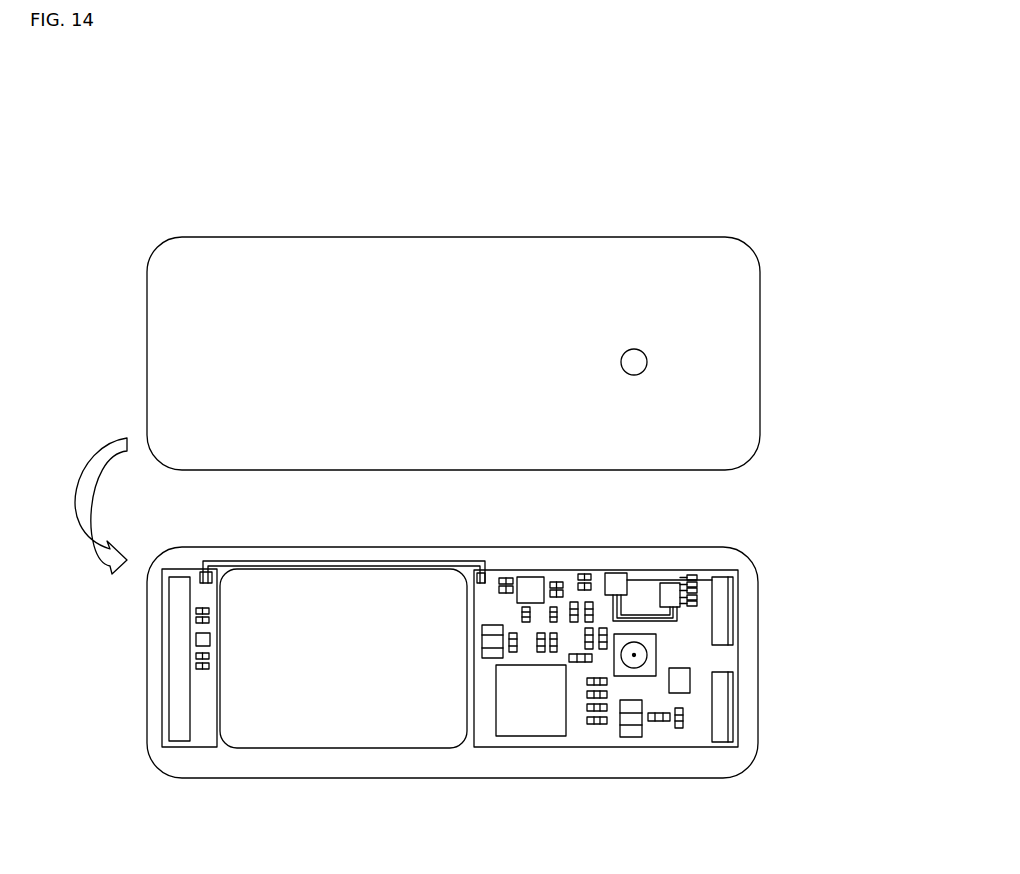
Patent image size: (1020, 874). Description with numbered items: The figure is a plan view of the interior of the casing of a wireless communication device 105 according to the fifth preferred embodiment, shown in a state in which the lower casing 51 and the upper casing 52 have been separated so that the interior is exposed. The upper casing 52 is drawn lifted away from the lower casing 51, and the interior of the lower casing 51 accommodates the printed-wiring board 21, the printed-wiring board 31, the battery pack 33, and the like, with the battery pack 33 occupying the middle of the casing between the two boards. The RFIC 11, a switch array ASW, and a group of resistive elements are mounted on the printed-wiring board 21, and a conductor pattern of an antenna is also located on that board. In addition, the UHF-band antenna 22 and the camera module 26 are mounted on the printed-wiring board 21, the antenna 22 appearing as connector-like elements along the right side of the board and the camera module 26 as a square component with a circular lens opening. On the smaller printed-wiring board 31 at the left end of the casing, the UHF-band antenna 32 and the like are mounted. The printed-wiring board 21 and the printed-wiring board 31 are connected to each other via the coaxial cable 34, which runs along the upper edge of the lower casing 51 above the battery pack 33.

The wireless communication device 105 is at (797, 156).
The upper casing 52 is at (743, 242).
The lower casing 51 is at (745, 556).
The coaxial cable 34 is at (365, 562).
The printed-wiring board 31 is at (205, 738).
The UHF-band antenna 32 is at (178, 662).
The battery pack 33 is at (352, 738).
The printed-wiring board 21 is at (578, 738).
The RFIC 11 is at (613, 580).
The switch array ASW is at (668, 592).
The camera module 26 is at (652, 655).
The UHF-band antenna 22 is at (723, 600).